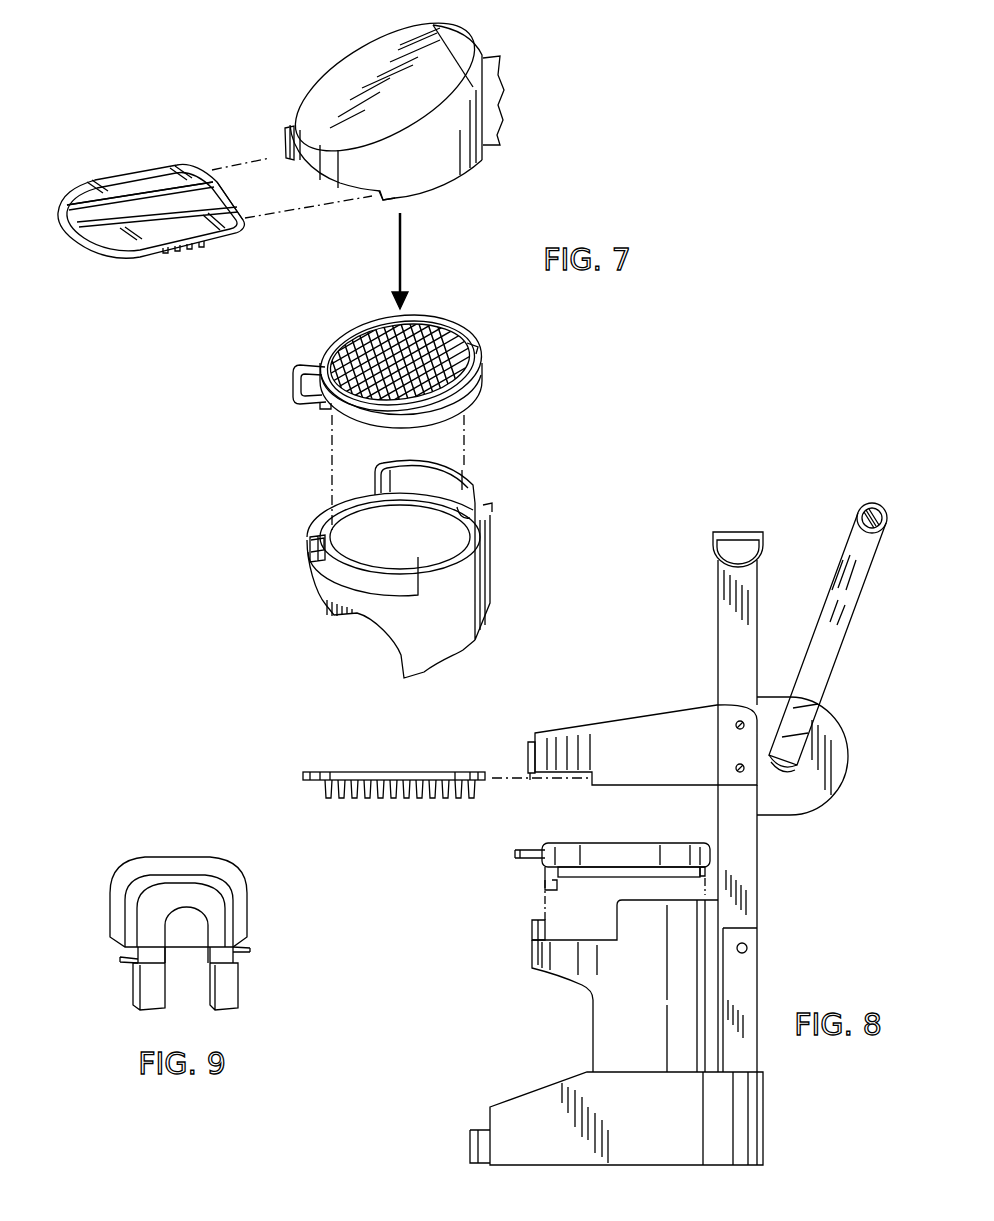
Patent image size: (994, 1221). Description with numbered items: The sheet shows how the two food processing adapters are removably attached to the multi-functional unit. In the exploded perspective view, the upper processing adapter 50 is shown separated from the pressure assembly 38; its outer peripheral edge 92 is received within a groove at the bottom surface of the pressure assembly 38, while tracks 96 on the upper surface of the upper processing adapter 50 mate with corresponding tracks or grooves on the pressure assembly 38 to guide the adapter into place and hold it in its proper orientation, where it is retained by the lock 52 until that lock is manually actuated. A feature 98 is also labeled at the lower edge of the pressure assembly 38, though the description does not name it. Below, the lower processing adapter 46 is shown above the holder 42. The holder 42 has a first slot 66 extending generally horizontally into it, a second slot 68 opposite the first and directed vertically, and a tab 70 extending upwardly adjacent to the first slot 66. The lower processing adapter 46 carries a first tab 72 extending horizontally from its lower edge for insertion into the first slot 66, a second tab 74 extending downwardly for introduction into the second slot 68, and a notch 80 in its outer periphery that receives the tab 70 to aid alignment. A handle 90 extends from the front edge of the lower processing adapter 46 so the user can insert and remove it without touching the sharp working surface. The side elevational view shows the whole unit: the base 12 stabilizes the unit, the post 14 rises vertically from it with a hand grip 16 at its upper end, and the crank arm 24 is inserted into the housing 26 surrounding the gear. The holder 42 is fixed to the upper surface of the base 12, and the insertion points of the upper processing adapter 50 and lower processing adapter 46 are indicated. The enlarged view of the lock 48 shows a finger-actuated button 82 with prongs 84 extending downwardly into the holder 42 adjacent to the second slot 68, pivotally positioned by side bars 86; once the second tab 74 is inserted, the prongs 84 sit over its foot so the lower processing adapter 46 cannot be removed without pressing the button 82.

In FIG. 8, the base 12 is at (755, 1125).
In FIG. 8, the post 14 is at (752, 890).
In FIG. 8, the hand grip 16 is at (735, 540).
In FIG. 8, the crank arm 24 is at (832, 632).
In FIG. 8, the housing 26 is at (810, 800).
In FIG. 7, the pressure assembly 38 is at (348, 70).
In FIG. 8, the pressure assembly 38 is at (650, 712).
In FIG. 7, the holder 42 is at (417, 643).
In FIG. 8, the holder 42 is at (610, 1015).
In FIG. 7, the lower processing adapter 46 is at (497, 386).
In FIG. 8, the lower processing adapter 46 is at (558, 845).
In FIG. 7, the lock 48 is at (310, 550).
In FIG. 8, the lock 48 is at (530, 930).
In FIG. 9, the lock 48 is at (170, 893).
In FIG. 7, the upper processing adapter 50 is at (101, 262).
In FIG. 8, the upper processing adapter 50 is at (330, 772).
In FIG. 7, the lock 52 is at (278, 140).
In FIG. 8, the lock 52 is at (527, 754).
In FIG. 7, the first slot 66 is at (466, 505).
In FIG. 7, the second slot 68 is at (313, 538).
In FIG. 7, the tab 70 is at (492, 504).
In FIG. 8, the first tab 72 is at (702, 880).
In FIG. 7, the second tab 74 is at (324, 414).
In FIG. 8, the second tab 74 is at (556, 892).
In FIG. 7, the notch 80 is at (478, 348).
In FIG. 9, the finger-actuated button 82 is at (172, 868).
In FIG. 9, the prong 84 is at (150, 993).
In FIG. 9, the side bars 86 is at (243, 950).
In FIG. 7, the handle 90 is at (298, 370).
In FIG. 8, the handle 90 is at (515, 855).
In FIG. 7, the outer peripheral edge 92 is at (232, 230).
In FIG. 7, the tracks 96 is at (130, 190).
In FIG. 7, the head notch 98 is at (378, 202).